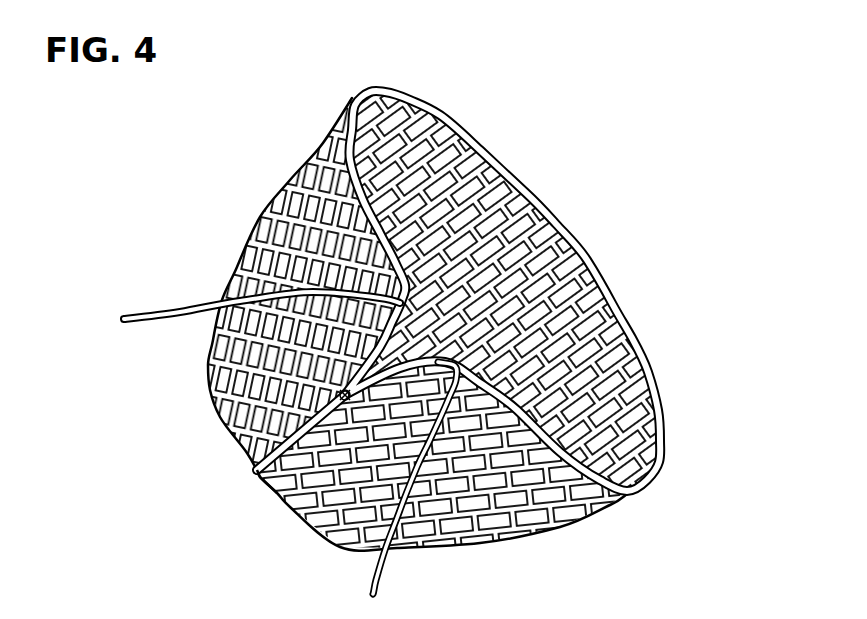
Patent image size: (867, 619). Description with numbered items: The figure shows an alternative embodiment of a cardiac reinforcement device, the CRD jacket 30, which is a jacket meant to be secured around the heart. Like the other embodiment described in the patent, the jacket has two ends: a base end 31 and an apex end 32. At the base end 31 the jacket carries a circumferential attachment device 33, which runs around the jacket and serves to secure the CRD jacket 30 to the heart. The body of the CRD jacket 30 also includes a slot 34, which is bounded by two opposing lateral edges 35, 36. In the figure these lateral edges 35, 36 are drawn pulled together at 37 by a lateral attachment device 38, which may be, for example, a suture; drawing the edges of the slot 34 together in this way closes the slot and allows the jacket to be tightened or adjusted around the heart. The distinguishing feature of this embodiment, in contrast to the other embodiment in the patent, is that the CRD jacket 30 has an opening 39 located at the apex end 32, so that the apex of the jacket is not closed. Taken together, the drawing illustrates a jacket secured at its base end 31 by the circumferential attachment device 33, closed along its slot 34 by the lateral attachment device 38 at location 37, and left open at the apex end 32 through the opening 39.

The CRD jacket 30 is at (606, 522).
The base end 31 is at (350, 98).
The apex end 32 is at (216, 430).
The circumferential attachment device 33 is at (135, 308).
The slot 34 is at (268, 450).
The lateral edge 35 is at (292, 450).
The lateral edge 36 is at (340, 397).
The pulled-together location 37 is at (335, 470).
The lateral attachment device 38 is at (342, 393).
The opening 39 is at (262, 492).